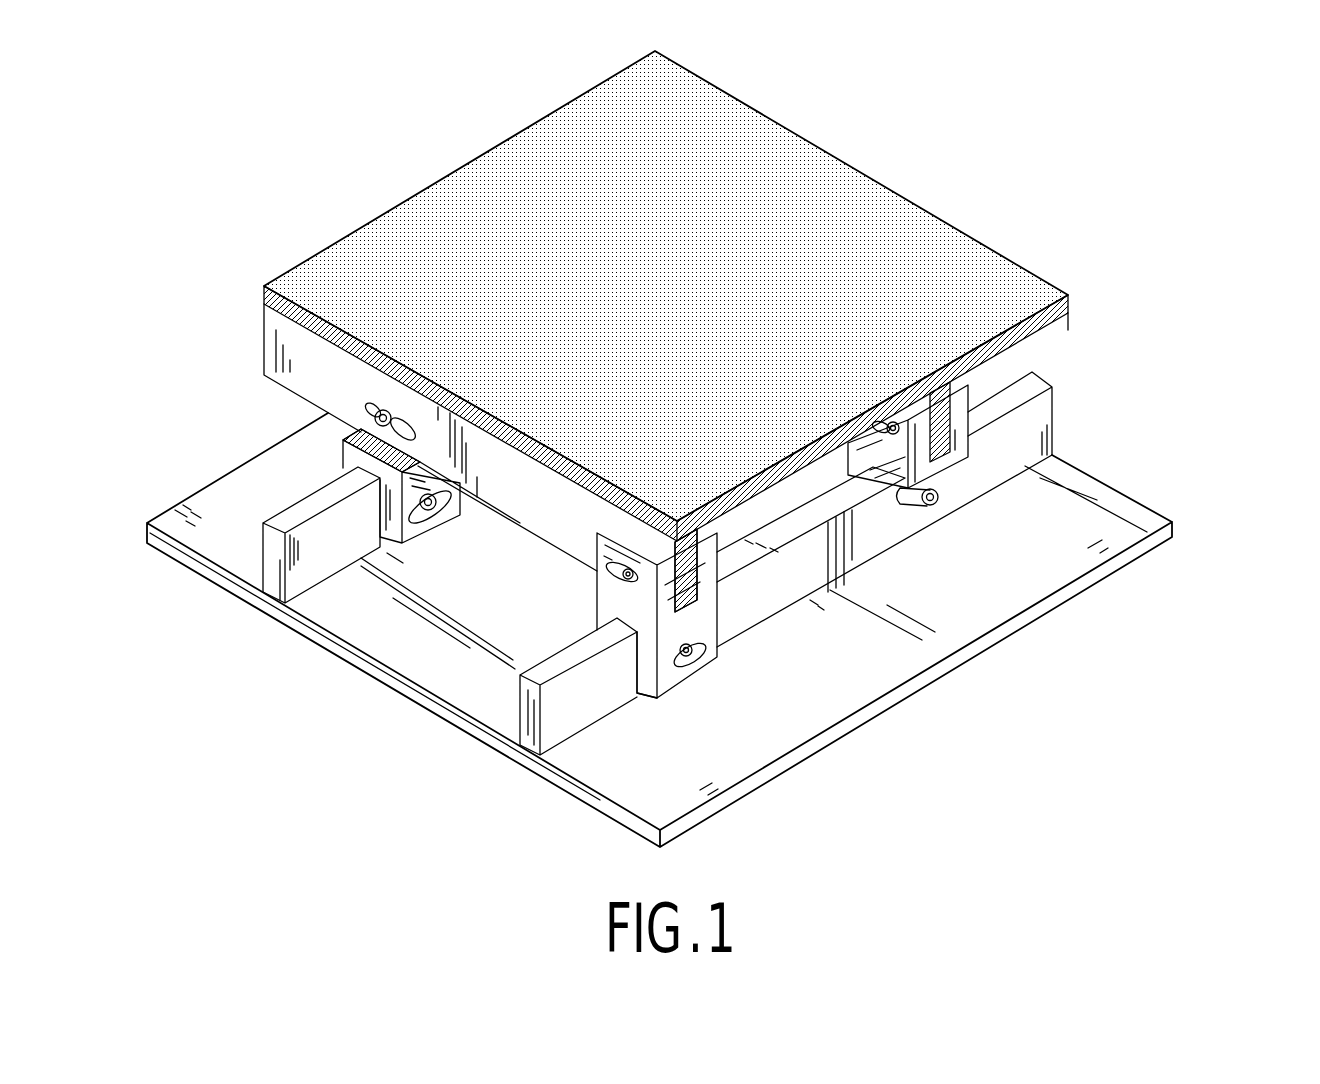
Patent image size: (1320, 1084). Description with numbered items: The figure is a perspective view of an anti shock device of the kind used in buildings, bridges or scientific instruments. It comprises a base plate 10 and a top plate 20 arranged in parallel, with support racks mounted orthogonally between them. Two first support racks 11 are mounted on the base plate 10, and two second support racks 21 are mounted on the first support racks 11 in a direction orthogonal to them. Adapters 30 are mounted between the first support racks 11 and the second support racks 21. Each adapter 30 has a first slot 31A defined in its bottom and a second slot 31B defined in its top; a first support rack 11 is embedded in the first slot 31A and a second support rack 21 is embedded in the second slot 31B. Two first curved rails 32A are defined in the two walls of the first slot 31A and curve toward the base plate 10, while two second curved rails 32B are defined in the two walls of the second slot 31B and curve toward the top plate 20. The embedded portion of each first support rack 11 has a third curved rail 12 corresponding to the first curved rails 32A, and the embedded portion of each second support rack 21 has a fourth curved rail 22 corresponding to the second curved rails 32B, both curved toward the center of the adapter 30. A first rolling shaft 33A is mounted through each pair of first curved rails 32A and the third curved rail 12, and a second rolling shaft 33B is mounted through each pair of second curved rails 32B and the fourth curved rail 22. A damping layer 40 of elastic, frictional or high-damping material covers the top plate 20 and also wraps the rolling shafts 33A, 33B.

The base plate 10 is at (1163, 509).
The first support rack 11 is at (313, 573).
The third curved rail 12 is at (906, 506).
The top plate 20 is at (1063, 335).
The second support rack 21 is at (692, 578).
The fourth curved rail 22 is at (378, 414).
The adapter 30 is at (593, 528).
The first slot 31A is at (623, 668).
The second slot 31B is at (692, 528).
The first curved rail 32A is at (704, 661).
The second curved rail 32B is at (612, 568).
The first rolling shaft 33A is at (938, 500).
The second rolling shaft 33B is at (364, 438).
The damping layer 40 is at (1010, 322).